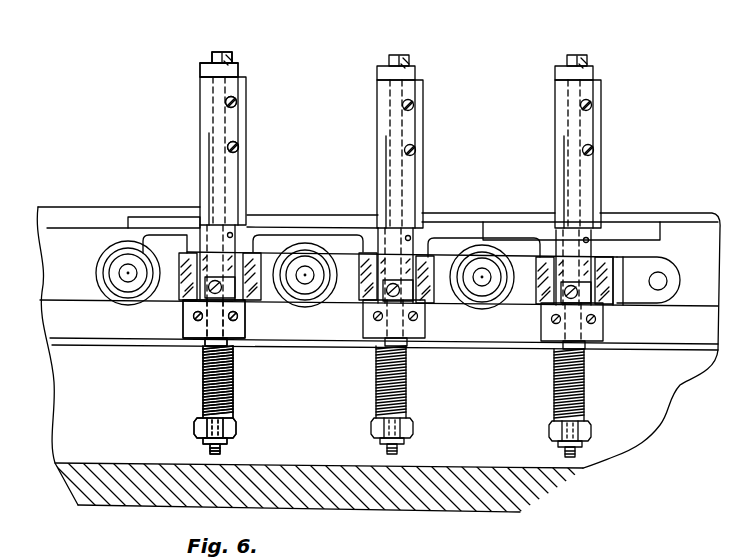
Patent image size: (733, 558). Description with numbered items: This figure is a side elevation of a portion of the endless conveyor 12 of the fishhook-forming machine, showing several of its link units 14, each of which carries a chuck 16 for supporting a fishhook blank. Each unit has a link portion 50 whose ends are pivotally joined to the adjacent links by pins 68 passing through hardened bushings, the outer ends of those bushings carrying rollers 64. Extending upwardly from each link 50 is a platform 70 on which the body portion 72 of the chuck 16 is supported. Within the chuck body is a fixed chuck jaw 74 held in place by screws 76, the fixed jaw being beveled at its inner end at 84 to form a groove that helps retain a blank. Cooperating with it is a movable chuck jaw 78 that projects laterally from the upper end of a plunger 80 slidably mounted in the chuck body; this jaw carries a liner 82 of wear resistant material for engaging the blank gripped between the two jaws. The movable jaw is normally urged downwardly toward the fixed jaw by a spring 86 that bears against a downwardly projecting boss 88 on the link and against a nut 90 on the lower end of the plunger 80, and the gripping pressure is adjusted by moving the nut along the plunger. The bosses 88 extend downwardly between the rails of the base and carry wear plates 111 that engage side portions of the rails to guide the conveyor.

The endless conveyor 12 is at (650, 178).
The link unit 14 is at (411, 252).
The chuck 16 is at (370, 165).
The link portion 50 is at (166, 260).
The roller 64 is at (103, 270).
The pin 68 is at (128, 276).
The platform 70 is at (150, 222).
The body portion 72 is at (206, 195).
The fixed chuck jaw 74 is at (236, 72).
The screw 76 is at (238, 147).
The movable chuck jaw 78 is at (224, 53).
The plunger 80 is at (213, 362).
The liner 82 is at (214, 65).
The bevel 84 is at (232, 62).
The spring 86 is at (232, 372).
The boss 88 is at (183, 318).
The nut 90 is at (232, 429).
The wear plate 111 is at (243, 318).